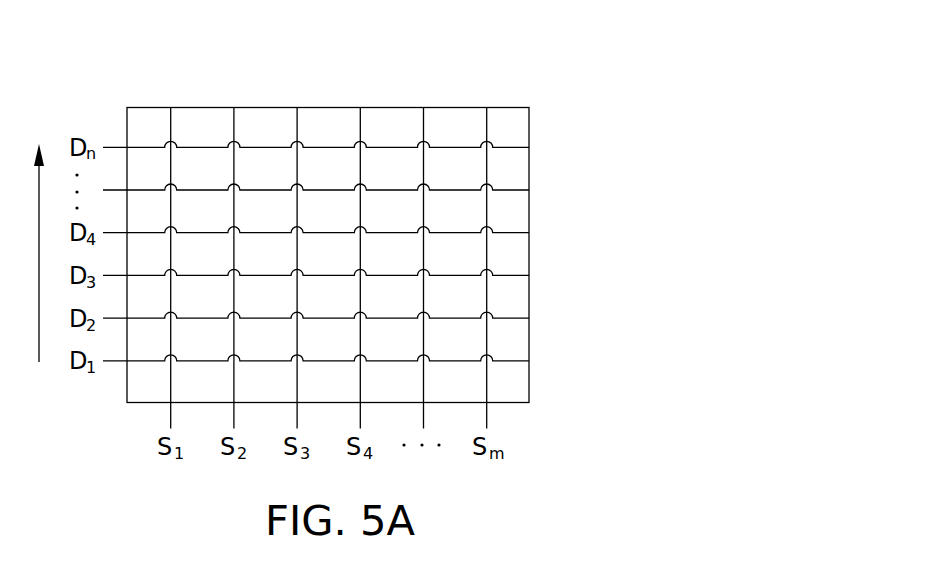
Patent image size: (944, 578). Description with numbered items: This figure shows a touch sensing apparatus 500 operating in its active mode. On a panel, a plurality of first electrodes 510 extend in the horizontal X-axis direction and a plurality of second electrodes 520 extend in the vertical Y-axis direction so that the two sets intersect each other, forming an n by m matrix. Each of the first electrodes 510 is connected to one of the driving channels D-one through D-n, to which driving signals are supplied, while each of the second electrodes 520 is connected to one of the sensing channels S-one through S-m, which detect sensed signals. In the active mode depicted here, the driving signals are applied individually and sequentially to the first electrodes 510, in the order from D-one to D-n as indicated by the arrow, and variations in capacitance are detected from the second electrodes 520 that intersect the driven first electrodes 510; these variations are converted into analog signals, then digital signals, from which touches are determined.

The touch sensing apparatus 500 is at (562, 120).
The first electrodes 510 is at (510, 148).
The second electrodes 520 is at (487, 412).